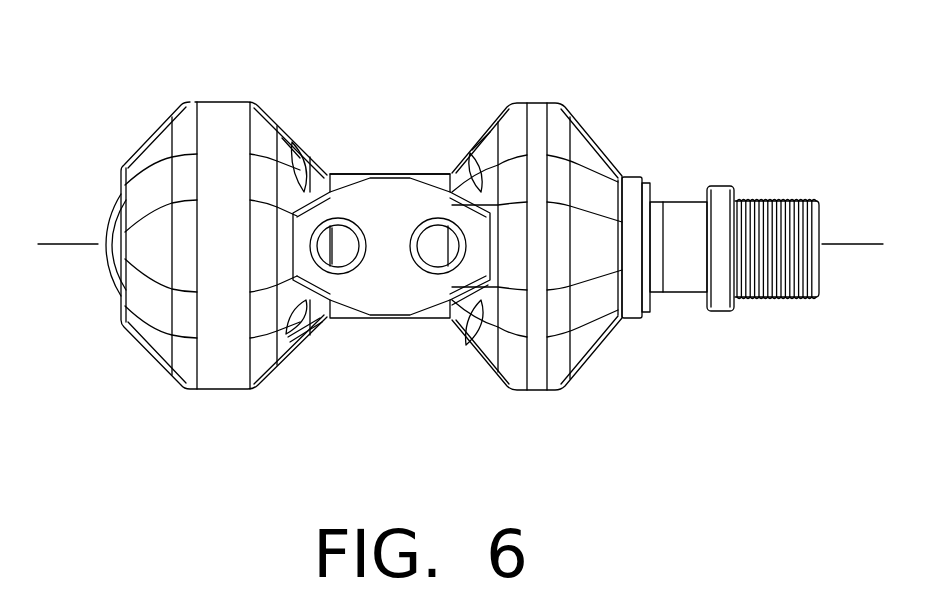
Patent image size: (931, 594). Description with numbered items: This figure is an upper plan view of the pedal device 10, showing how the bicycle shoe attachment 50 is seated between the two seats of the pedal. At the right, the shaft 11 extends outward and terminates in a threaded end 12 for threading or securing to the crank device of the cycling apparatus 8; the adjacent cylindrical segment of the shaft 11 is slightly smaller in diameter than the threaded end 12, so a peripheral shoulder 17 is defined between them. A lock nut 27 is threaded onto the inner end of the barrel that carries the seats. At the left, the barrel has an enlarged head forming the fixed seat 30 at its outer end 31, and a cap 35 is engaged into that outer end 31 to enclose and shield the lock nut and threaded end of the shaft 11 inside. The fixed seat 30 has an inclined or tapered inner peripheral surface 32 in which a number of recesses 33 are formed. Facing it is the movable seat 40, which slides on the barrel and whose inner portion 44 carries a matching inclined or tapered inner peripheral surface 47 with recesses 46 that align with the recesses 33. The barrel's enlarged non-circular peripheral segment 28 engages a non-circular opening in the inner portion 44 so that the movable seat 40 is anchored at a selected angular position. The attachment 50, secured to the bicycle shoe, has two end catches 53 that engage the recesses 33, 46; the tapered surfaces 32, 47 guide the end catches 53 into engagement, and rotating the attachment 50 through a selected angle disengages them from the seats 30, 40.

The pedal device 10 is at (538, 77).
The fixed seat 30 is at (173, 383).
The outer end 31 is at (123, 148).
The cap 35 is at (108, 237).
The recesses 33 is at (288, 325).
The inclined or tapered inner peripheral surface 32 is at (290, 372).
The attachment 50 is at (378, 297).
The peripheral swelling or segment 28 is at (338, 176).
The end catches 53 is at (483, 240).
The inner portion 44 is at (454, 344).
The movable seat 40 is at (600, 343).
The inclined or tapered inner peripheral surface 47 is at (486, 110).
The recesses 46 is at (478, 160).
The lock nut 27 is at (631, 182).
The peripheral shoulder 17 is at (657, 207).
The threaded end 12 is at (773, 215).
The shaft 11 is at (779, 314).
The cycling apparatus 8 is at (78, 270).